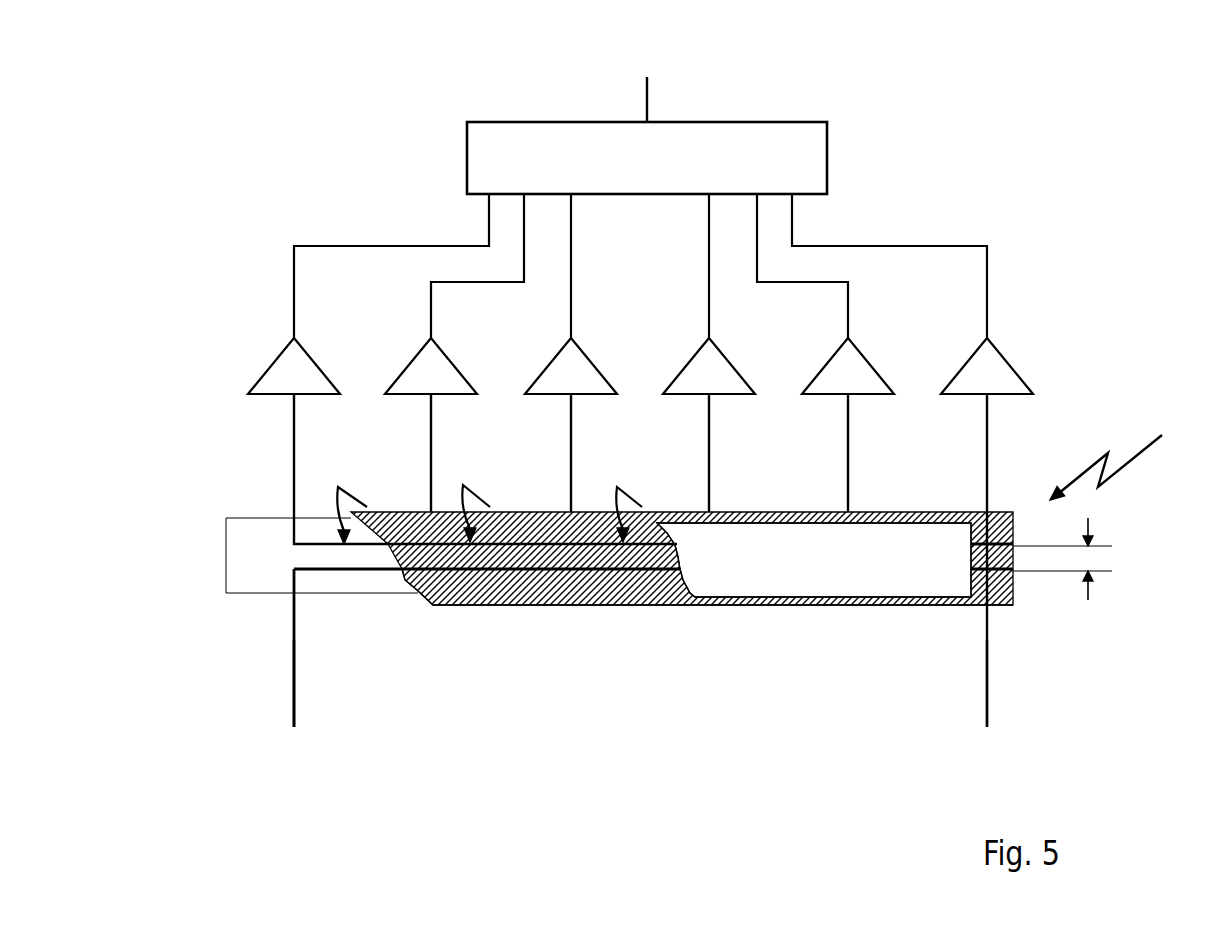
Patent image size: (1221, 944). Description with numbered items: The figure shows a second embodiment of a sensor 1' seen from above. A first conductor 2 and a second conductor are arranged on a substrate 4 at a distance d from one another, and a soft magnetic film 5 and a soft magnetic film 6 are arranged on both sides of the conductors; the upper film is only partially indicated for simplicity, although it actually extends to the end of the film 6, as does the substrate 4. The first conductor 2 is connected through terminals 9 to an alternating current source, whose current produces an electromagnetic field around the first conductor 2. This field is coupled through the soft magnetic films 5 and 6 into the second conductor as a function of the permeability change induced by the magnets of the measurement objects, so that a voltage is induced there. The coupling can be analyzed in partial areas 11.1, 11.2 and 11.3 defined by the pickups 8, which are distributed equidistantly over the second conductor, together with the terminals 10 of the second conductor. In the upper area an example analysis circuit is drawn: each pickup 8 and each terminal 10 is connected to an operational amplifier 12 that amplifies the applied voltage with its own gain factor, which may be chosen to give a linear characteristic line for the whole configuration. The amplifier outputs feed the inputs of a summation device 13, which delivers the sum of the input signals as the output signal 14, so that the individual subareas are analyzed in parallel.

The sensor 1' is at (1133, 452).
The first conductor 2 is at (575, 570).
The substrate 4 is at (528, 585).
The soft magnetic film 5 is at (813, 577).
The soft magnetic film 6 is at (247, 542).
The pickup 8 is at (712, 475).
The terminals 9 is at (294, 669).
The terminals 10 is at (293, 448).
The partial area 11.1 is at (367, 507).
The partial area 11.2 is at (490, 507).
The partial area 11.3 is at (642, 507).
The operational amplifier 12 is at (293, 350).
The summation device 13 is at (590, 145).
The output signal 14 is at (650, 95).
The distance d is at (1080, 559).